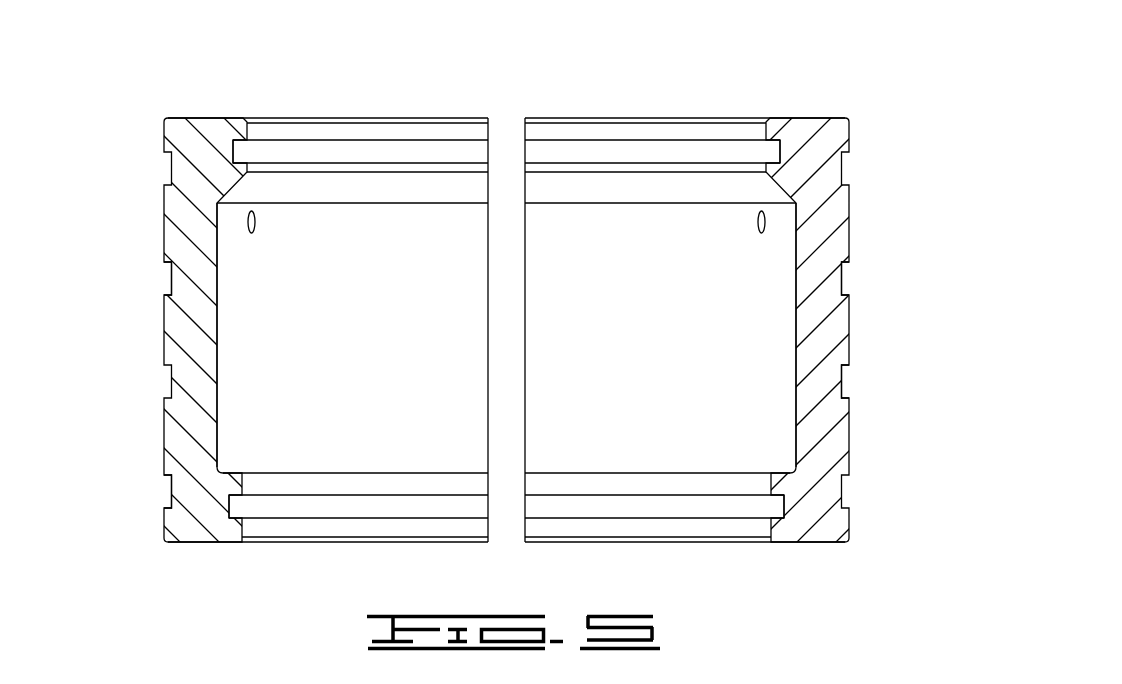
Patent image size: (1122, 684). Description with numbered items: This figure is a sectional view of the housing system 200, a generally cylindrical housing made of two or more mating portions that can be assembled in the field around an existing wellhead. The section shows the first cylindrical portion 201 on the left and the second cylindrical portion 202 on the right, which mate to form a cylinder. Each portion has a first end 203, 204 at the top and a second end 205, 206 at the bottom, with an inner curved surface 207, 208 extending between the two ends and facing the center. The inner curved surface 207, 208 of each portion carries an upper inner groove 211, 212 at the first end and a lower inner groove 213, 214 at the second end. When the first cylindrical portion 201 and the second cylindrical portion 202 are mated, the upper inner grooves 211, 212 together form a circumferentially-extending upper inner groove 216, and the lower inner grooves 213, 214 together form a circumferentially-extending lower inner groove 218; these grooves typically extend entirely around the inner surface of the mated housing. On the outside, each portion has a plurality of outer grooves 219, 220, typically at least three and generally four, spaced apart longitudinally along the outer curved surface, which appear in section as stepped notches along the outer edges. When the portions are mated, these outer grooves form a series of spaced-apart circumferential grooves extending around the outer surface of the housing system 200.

The housing system 200 is at (503, 317).
The first cylindrical portion 201 is at (164, 197).
The second cylindrical portion 202 is at (848, 197).
The first end 203 is at (200, 118).
The first end 204 is at (813, 118).
The second end 205 is at (203, 542).
The second end 206 is at (822, 543).
The inner curved surface 207 is at (217, 366).
The inner curved surface 208 is at (797, 454).
The upper inner groove 211 is at (250, 155).
The upper inner groove 212 is at (762, 152).
The lower inner groove 213 is at (236, 508).
The lower inner groove 214 is at (770, 505).
The circumferentially-extending upper inner groove 216 is at (477, 122).
The circumferentially-extending lower inner groove 218 is at (482, 496).
The outer grooves 219 is at (172, 278).
The outer grooves 220 is at (842, 278).